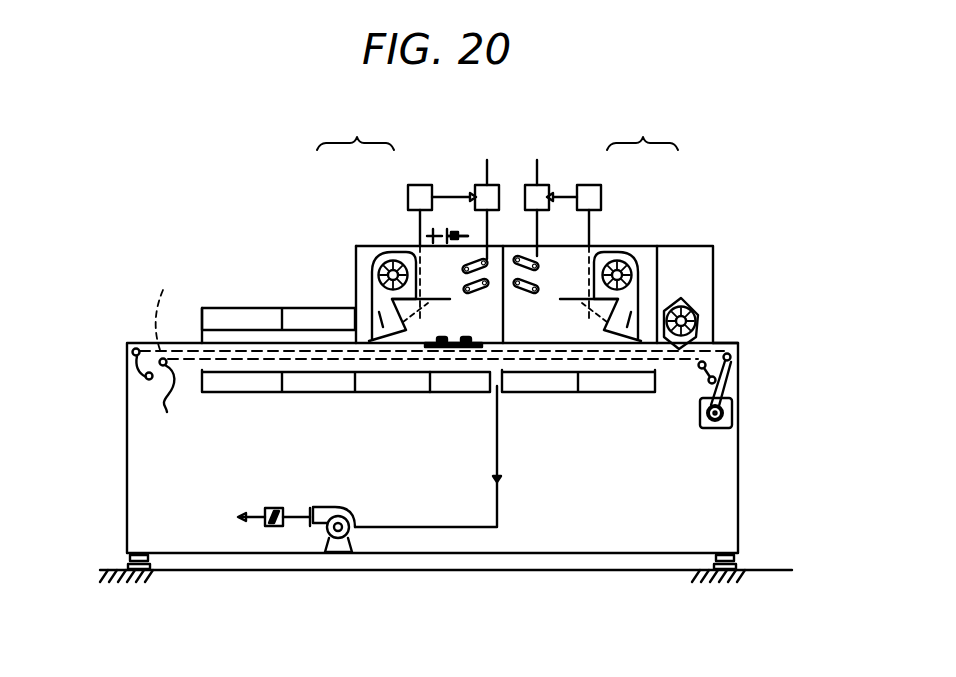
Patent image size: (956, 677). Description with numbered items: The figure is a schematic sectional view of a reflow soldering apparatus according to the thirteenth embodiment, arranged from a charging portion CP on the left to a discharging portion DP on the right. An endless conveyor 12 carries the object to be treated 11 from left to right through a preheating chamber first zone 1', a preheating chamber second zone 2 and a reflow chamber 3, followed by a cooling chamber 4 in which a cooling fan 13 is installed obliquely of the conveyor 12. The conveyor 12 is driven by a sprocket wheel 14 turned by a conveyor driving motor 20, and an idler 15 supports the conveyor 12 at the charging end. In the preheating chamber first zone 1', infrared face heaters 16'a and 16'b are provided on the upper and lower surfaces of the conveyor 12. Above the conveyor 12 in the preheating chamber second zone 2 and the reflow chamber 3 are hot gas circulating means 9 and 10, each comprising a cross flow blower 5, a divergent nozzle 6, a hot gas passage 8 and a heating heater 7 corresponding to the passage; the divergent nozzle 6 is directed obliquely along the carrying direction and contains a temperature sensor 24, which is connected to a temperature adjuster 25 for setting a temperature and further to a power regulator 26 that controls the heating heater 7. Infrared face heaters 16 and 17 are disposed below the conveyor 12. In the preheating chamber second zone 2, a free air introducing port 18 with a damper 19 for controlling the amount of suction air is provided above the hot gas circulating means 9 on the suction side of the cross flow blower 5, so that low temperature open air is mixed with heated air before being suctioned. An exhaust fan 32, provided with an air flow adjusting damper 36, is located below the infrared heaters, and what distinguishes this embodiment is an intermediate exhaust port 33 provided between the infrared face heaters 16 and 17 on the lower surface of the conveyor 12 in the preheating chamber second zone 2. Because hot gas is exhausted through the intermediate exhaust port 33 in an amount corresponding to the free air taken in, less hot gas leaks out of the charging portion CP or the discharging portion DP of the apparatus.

The preheating chamber second zone 2 is at (356, 281).
The reflow chamber 3 is at (666, 246).
The cooling chamber 4 is at (716, 249).
The cross flow blower 5 is at (363, 256).
The divergent nozzle 6 is at (357, 285).
The heating heater 7 is at (445, 264).
The hot gas passage 8 is at (425, 272).
The hot gas circulating means 9 is at (355, 129).
The hot gas circulating means 10 is at (642, 131).
The object to be treated 11 is at (480, 341).
The conveyor 12 is at (165, 309).
The cooling fan 13 is at (696, 308).
The sprocket wheel 14 is at (742, 351).
The idler 15 is at (136, 349).
The infrared face heater 16 is at (460, 411).
The infrared face heater 16'a is at (278, 297).
The infrared face heater 16'b is at (316, 415).
The infrared face heater 17 is at (557, 384).
The free air introducing port 18 is at (462, 236).
The damper 19 is at (456, 232).
The conveyor driving motor 20 is at (712, 432).
The temperature sensor 24 is at (419, 307).
The temperature adjuster 25 is at (420, 184).
The power regulator 26 is at (497, 185).
The exhaust fan 32 is at (338, 505).
The intermediate exhaust port 33 is at (502, 390).
The air flow adjusting damper 36 is at (273, 507).
The preheating chamber first zone 1' is at (206, 279).
The charging portion CP is at (201, 341).
The discharging portion DP is at (719, 343).